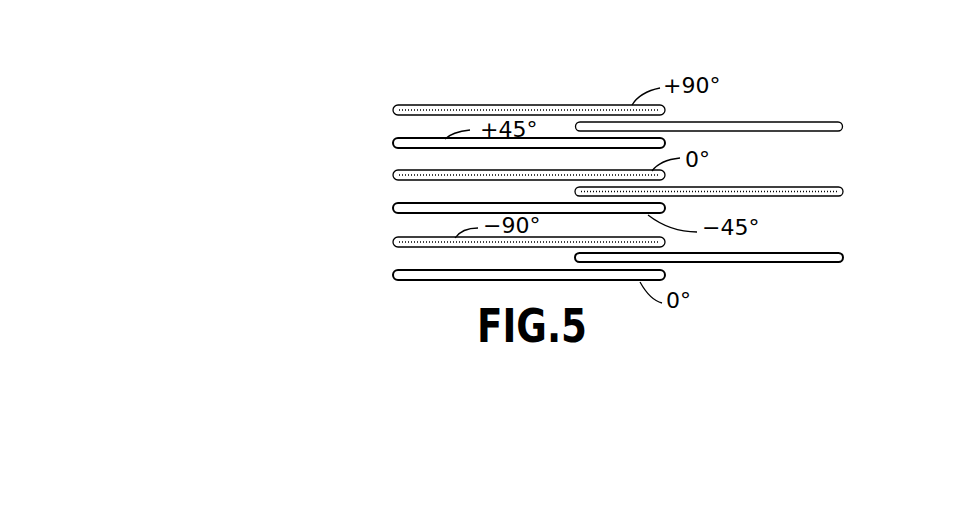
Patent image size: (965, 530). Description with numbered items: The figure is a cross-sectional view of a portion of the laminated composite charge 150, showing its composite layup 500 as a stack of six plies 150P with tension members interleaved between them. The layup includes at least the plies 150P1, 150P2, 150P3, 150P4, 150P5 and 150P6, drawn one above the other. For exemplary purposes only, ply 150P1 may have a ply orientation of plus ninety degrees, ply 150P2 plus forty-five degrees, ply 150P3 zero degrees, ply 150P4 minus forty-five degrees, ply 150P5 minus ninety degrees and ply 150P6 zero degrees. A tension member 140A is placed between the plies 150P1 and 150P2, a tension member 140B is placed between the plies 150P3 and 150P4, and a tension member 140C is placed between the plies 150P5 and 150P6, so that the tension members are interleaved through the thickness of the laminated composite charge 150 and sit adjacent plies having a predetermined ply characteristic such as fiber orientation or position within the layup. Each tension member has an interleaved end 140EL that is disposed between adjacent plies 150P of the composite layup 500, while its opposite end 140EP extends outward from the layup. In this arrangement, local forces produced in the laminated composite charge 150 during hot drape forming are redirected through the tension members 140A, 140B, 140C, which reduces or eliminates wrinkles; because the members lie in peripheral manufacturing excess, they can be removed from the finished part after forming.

The composite layup 500 is at (260, 83).
The laminated composite charge 150 is at (486, 92).
The ply 150P is at (388, 298).
The ply 150P1 is at (393, 108).
The ply 150P2 is at (393, 141).
The ply 150P3 is at (393, 173).
The ply 150P4 is at (393, 206).
The ply 150P5 is at (393, 240).
The ply 150P6 is at (393, 273).
The tension member 140A is at (847, 124).
The tension member 140B is at (847, 190).
The tension member 140C is at (847, 257).
The interleaved end 140EL is at (568, 118).
The electrode pad end 140EP is at (854, 134).